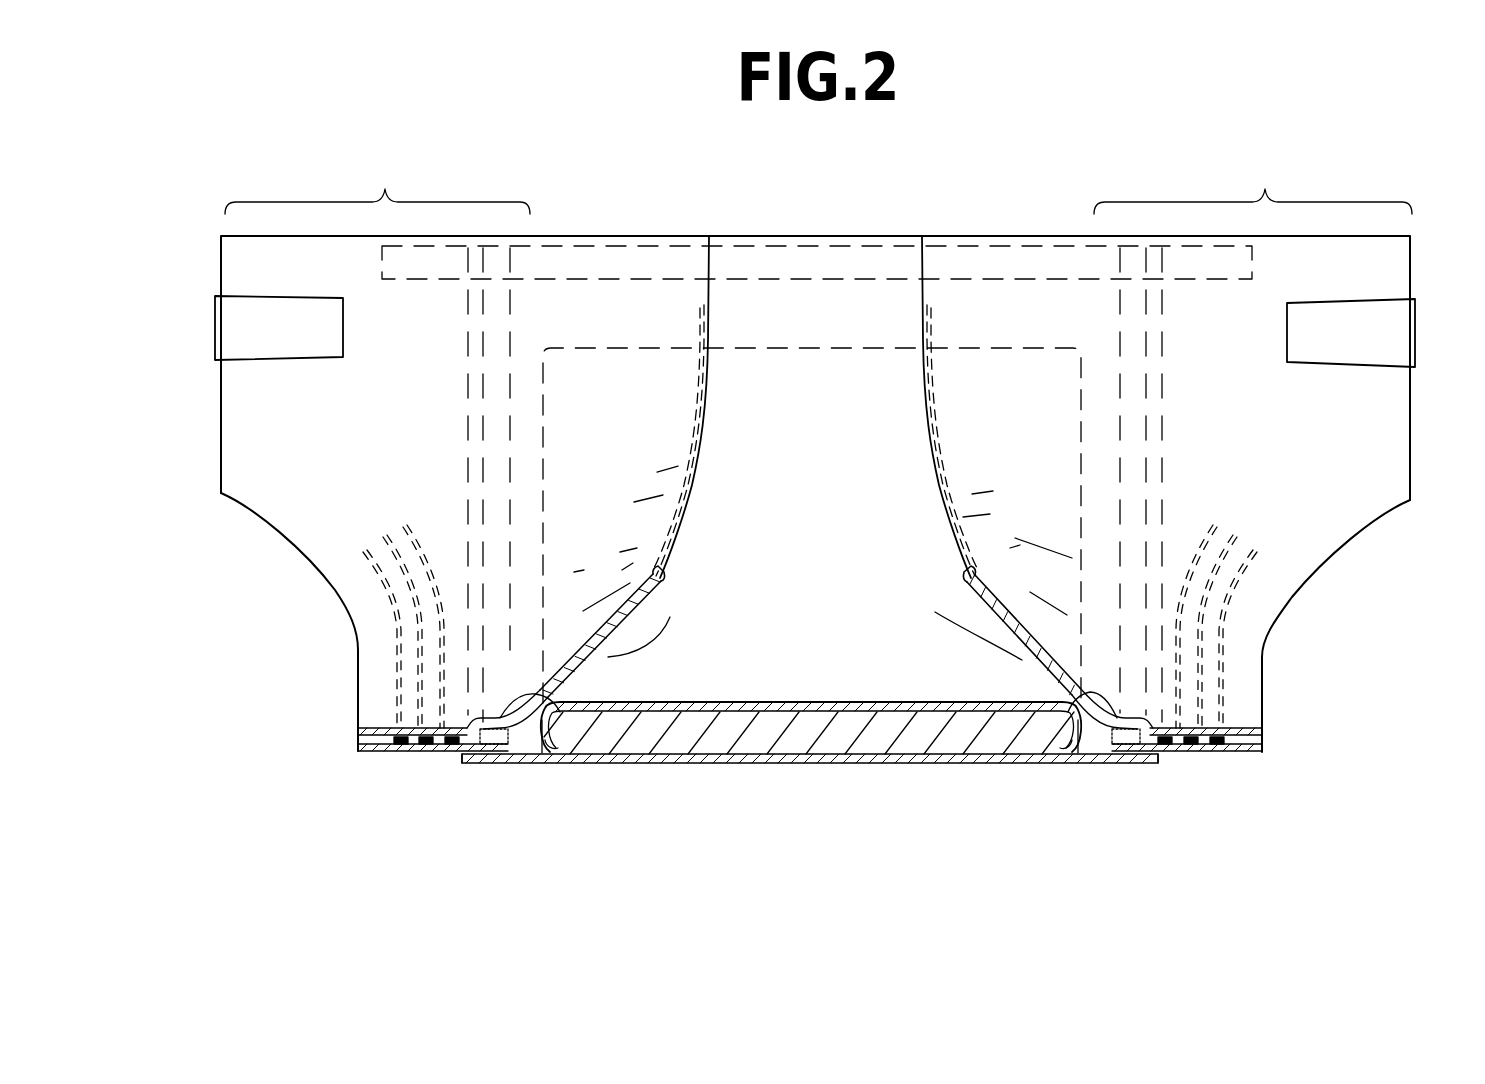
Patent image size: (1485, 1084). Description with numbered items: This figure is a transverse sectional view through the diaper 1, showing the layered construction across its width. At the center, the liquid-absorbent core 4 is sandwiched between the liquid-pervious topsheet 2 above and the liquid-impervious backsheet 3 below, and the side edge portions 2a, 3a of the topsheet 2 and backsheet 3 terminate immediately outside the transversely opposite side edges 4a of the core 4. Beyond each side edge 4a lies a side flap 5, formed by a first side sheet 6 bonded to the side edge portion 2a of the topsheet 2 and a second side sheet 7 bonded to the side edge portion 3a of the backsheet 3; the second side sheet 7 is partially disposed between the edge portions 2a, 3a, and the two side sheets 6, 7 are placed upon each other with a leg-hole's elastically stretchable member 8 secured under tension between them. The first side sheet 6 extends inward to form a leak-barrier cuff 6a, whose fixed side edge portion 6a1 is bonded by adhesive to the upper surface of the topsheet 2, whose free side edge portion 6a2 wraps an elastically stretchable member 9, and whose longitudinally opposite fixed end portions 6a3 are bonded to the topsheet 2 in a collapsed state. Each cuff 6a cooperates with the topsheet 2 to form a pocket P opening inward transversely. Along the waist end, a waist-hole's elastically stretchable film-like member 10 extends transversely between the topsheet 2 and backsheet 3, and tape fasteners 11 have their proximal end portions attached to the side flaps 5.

The diaper 1 is at (1430, 188).
The liquid-pervious topsheet 2 is at (733, 705).
The side edge portion of the topsheet 2a is at (512, 747).
The liquid-impervious backsheet 3 is at (743, 765).
The side edge portion of the backsheet 3a is at (478, 763).
The liquid-absorbent core 4 is at (805, 740).
The side edge of the core 4a is at (549, 745).
The side flap 5 is at (818, 181).
The first side sheet 6 is at (405, 727).
The leak-barrier cuff 6a is at (586, 643).
The fixed side edge portion 6a1 is at (547, 692).
The free side edge portion 6a2 is at (627, 598).
The fixed end portion 6a3 is at (613, 295).
The second side sheet 7 is at (410, 754).
The leg-hole's elastically stretchable member 8 is at (436, 592).
The elastically stretchable member 9 is at (652, 572).
The waist-hole's elastically stretchable film-like member 10 is at (832, 255).
The tape fastener 11 is at (272, 320).
The pocket P is at (815, 621).